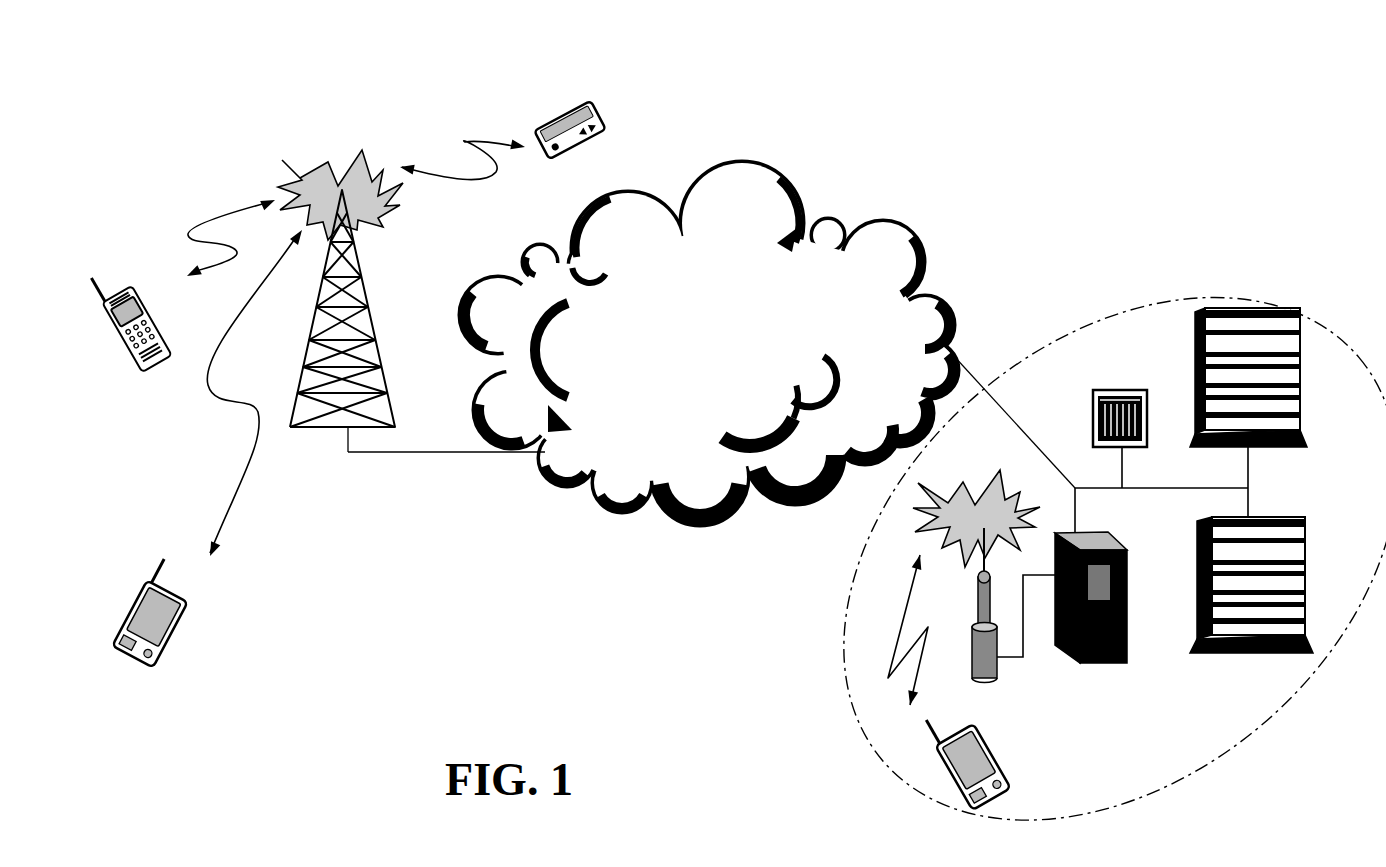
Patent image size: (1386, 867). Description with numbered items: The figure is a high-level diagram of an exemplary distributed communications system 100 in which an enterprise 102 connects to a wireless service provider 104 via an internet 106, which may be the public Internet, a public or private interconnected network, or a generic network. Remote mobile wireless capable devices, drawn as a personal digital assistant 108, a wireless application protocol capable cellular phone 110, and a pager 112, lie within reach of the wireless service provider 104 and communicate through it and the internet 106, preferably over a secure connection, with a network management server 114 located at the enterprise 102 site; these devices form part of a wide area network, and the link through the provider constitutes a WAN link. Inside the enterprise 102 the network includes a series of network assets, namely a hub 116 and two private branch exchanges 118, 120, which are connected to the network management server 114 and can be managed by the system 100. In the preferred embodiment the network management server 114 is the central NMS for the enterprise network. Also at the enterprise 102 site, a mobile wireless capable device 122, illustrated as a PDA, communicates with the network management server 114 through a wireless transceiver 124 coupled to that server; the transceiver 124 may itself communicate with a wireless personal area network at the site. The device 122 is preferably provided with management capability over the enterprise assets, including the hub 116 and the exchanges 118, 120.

The distributed communications system 100 is at (1038, 85).
The enterprise 102 is at (1292, 715).
The wireless service provider 104 is at (373, 298).
The internet 106 is at (800, 175).
The personal digital assistant (PDA) 108 is at (182, 647).
The wireless application protocol (WAP) capable cellular phone 110 is at (106, 287).
The pager 112 is at (561, 101).
The network management server (NMS) 114 is at (1132, 612).
The hub 116 is at (1115, 376).
The private branch exchange (PBX) 118 is at (1312, 592).
The private branch exchange (PBX) 120 is at (1313, 405).
The mobile wireless capable device (PDA) 122 is at (1015, 763).
The wireless transceiver 124 is at (990, 683).